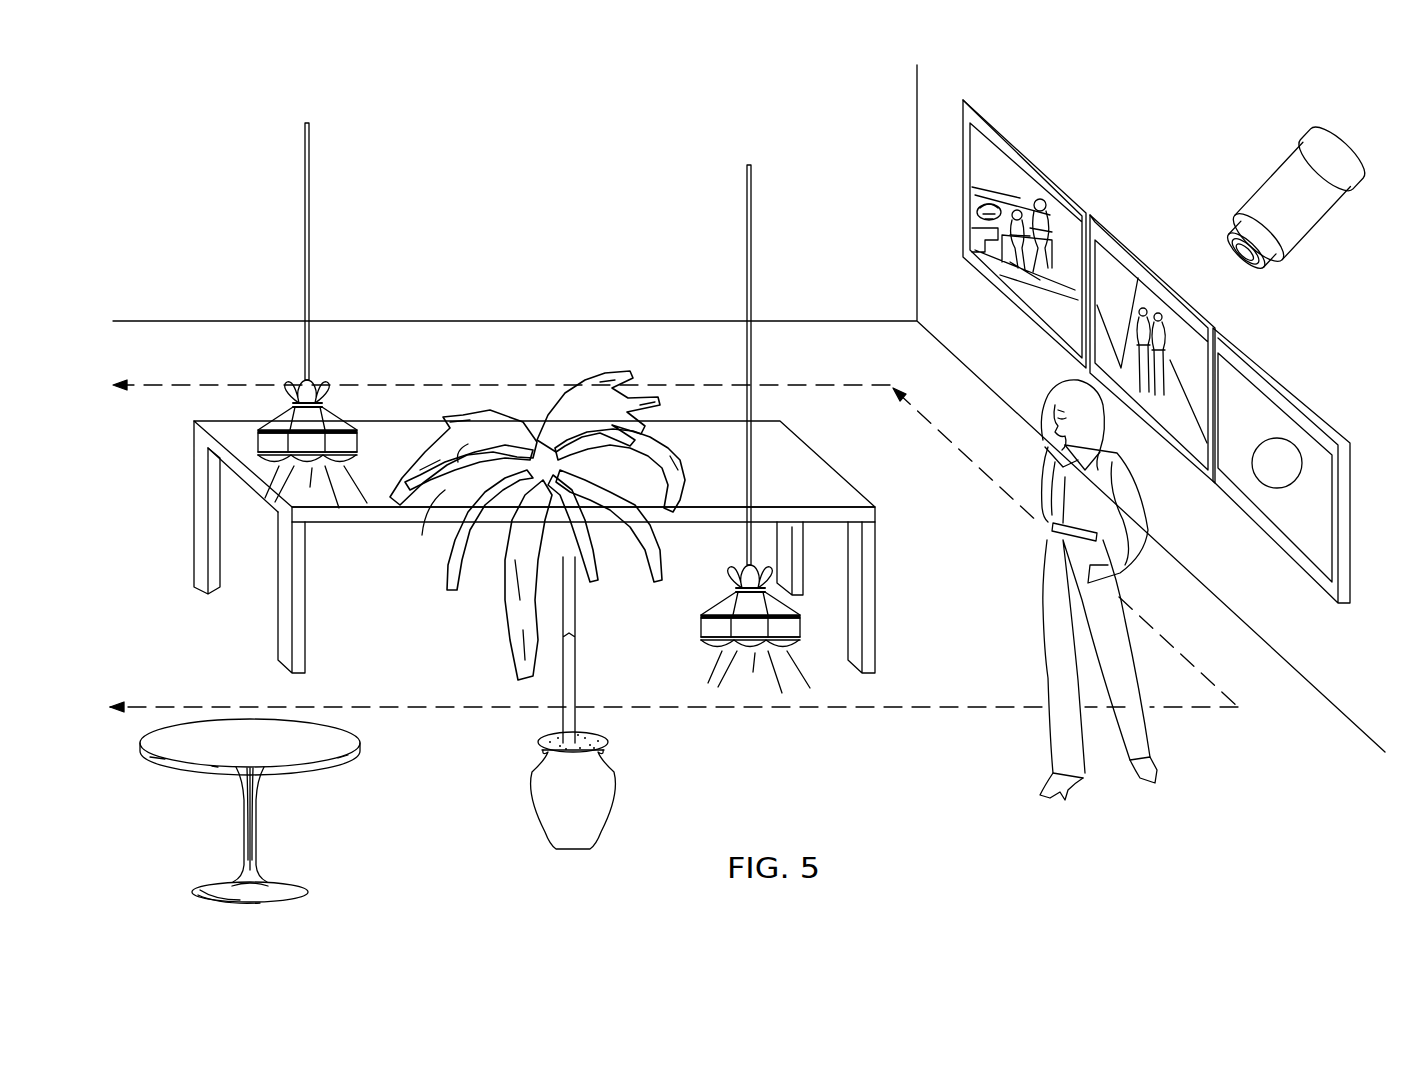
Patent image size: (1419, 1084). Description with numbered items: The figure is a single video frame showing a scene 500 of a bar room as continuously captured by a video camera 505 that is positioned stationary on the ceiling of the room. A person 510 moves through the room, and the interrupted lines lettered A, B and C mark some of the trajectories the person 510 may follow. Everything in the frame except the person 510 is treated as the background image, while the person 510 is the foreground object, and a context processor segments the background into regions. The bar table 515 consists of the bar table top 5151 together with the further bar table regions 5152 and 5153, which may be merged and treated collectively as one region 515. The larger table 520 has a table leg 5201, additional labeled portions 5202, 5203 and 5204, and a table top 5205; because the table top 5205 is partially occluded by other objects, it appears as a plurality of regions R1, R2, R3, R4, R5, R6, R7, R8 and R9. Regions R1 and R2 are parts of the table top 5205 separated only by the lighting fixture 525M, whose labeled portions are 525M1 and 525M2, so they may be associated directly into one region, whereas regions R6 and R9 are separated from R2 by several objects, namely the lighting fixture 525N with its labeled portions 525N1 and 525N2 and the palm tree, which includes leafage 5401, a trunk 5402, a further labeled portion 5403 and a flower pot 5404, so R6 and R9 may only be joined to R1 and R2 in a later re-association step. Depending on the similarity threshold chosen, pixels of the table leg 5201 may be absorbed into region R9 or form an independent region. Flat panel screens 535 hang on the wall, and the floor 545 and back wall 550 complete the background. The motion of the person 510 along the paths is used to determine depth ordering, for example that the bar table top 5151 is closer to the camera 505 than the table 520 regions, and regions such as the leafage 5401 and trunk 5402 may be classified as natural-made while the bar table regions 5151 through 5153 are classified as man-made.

The scene 500 is at (213, 141).
The video camera 505 is at (1345, 152).
The person 510 is at (1032, 593).
The bar table 515 is at (262, 788).
The bar table top 5151 is at (200, 733).
The bar table region 5152 is at (243, 818).
The bar table region 5153 is at (290, 883).
The table 520 is at (556, 505).
The table leg 5201 is at (193, 503).
The table leg 5202 is at (277, 603).
The table leg 5203 is at (876, 655).
The table leg 5204 is at (806, 553).
The table top 5205 is at (705, 433).
The lighting fixture 525N is at (342, 315).
The lamp N cord / pole 525N1 is at (311, 222).
The lamp N shade 525N2 is at (316, 443).
The lighting fixture 525M is at (778, 429).
The lamp M cord / pole 525M1 is at (753, 267).
The lamp M shade 525M2 is at (724, 607).
The flat panel screens 535 is at (1128, 234).
The leafage 5401 is at (447, 580).
The trunk 5402 is at (577, 630).
The plant soil 5403 is at (596, 733).
The flower pot 5404 is at (598, 807).
The floor 545 is at (150, 353).
The back wall 550 is at (212, 385).
The region R1 is at (801, 485).
The region R2 is at (662, 460).
The region R3 is at (621, 485).
The region R4 is at (472, 615).
The region R5 is at (426, 529).
The region R6 is at (478, 442).
The region R7 is at (381, 435).
The region R8 is at (306, 495).
The region R9 is at (236, 432).